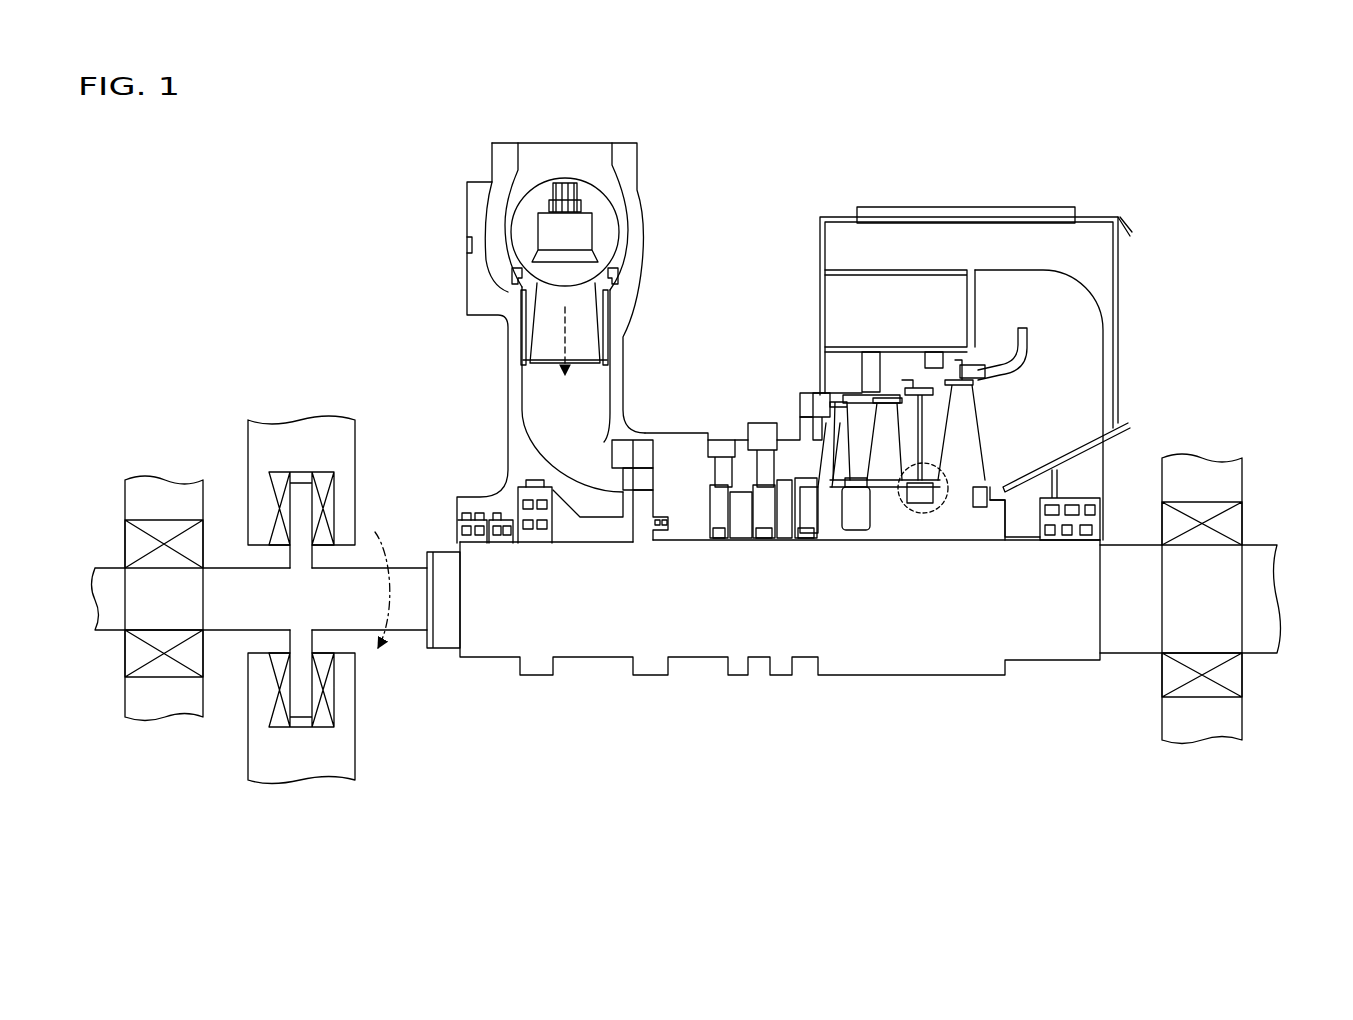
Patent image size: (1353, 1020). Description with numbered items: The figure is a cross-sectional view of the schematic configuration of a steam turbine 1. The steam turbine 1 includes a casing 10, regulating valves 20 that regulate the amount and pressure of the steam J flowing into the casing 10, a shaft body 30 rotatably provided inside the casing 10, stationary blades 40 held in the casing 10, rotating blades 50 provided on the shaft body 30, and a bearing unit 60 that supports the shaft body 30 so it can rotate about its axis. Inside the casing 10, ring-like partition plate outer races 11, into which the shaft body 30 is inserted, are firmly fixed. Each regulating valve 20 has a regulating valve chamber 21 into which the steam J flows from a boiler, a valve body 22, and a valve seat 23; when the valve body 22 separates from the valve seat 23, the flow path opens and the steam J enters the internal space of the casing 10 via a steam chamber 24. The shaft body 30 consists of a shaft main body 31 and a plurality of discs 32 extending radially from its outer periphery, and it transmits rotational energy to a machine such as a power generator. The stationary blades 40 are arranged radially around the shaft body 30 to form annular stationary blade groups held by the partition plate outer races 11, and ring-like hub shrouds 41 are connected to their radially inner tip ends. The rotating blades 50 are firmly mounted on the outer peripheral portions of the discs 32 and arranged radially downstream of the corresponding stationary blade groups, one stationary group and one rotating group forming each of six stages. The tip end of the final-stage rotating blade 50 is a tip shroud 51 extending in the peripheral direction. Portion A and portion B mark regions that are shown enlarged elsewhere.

The steam turbine 1 is at (797, 273).
The casing 10 is at (752, 402).
The partition plate outer race 11 is at (616, 452).
The regulating valve 20 is at (607, 235).
The regulating valve chamber 21 is at (592, 191).
The valve body 22 is at (598, 262).
The valve seat 23 is at (515, 270).
The steam chamber 24 is at (607, 376).
The shaft body 30 is at (840, 632).
The shaft main body 31 is at (943, 640).
The disc 32 is at (648, 522).
The stationary blade 40 is at (618, 478).
The hub shroud 41 is at (715, 522).
The rotating blade 50 is at (647, 478).
The tip shroud 51 is at (978, 372).
The bearing unit 60 is at (135, 404).
The portion A is at (935, 522).
The portion B is at (1003, 345).
The steam J is at (560, 345).